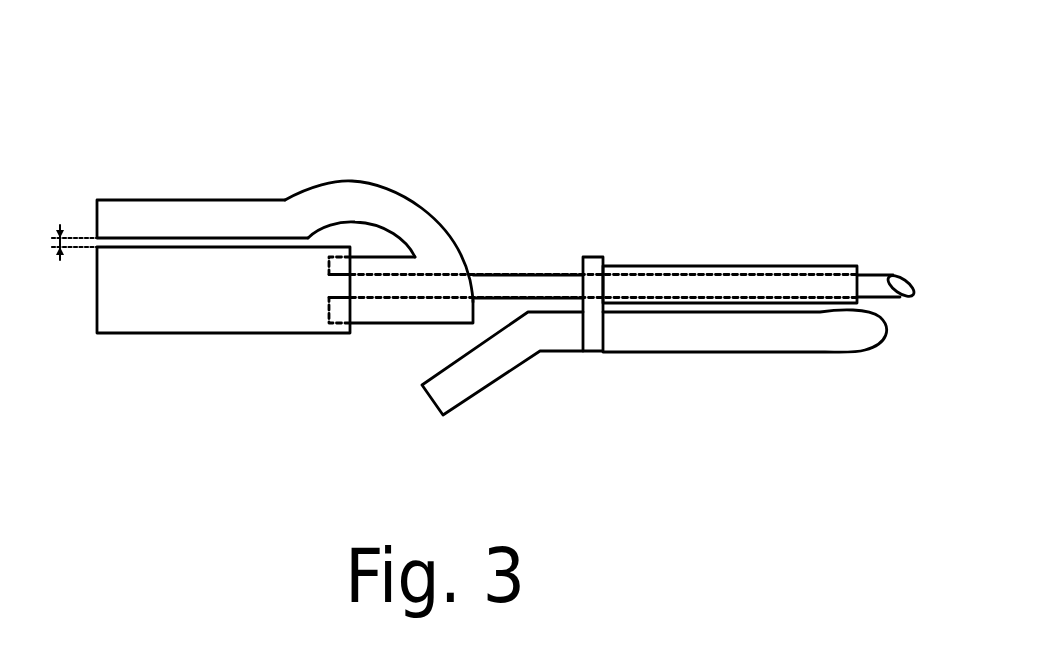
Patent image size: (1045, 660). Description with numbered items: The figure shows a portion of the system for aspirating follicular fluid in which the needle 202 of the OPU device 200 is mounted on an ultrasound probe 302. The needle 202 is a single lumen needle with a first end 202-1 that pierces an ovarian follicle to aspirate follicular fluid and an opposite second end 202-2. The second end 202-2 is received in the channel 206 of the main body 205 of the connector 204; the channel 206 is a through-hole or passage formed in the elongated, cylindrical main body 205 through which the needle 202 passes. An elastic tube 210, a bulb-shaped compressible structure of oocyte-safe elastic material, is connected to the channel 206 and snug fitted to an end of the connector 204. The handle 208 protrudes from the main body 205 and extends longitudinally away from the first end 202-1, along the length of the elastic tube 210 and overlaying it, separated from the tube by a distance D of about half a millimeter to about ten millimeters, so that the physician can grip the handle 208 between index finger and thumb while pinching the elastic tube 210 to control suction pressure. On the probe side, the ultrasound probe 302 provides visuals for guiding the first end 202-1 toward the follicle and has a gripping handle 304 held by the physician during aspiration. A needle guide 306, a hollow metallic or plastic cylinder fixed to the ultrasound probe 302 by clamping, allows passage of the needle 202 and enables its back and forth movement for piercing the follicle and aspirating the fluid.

The OPU device 200 is at (187, 105).
The connector 204 is at (368, 177).
The handle 208 is at (210, 200).
The elastic tube 210 is at (162, 333).
The channel 206 is at (418, 274).
The main body 205 is at (388, 313).
The needle 202 is at (539, 280).
The first end 202-1 is at (902, 275).
The second end 202-2 is at (329, 298).
The needle guide 306 is at (642, 266).
The ultrasound probe 302 is at (753, 335).
The gripping handle 304 is at (497, 383).
The distance D is at (63, 242).